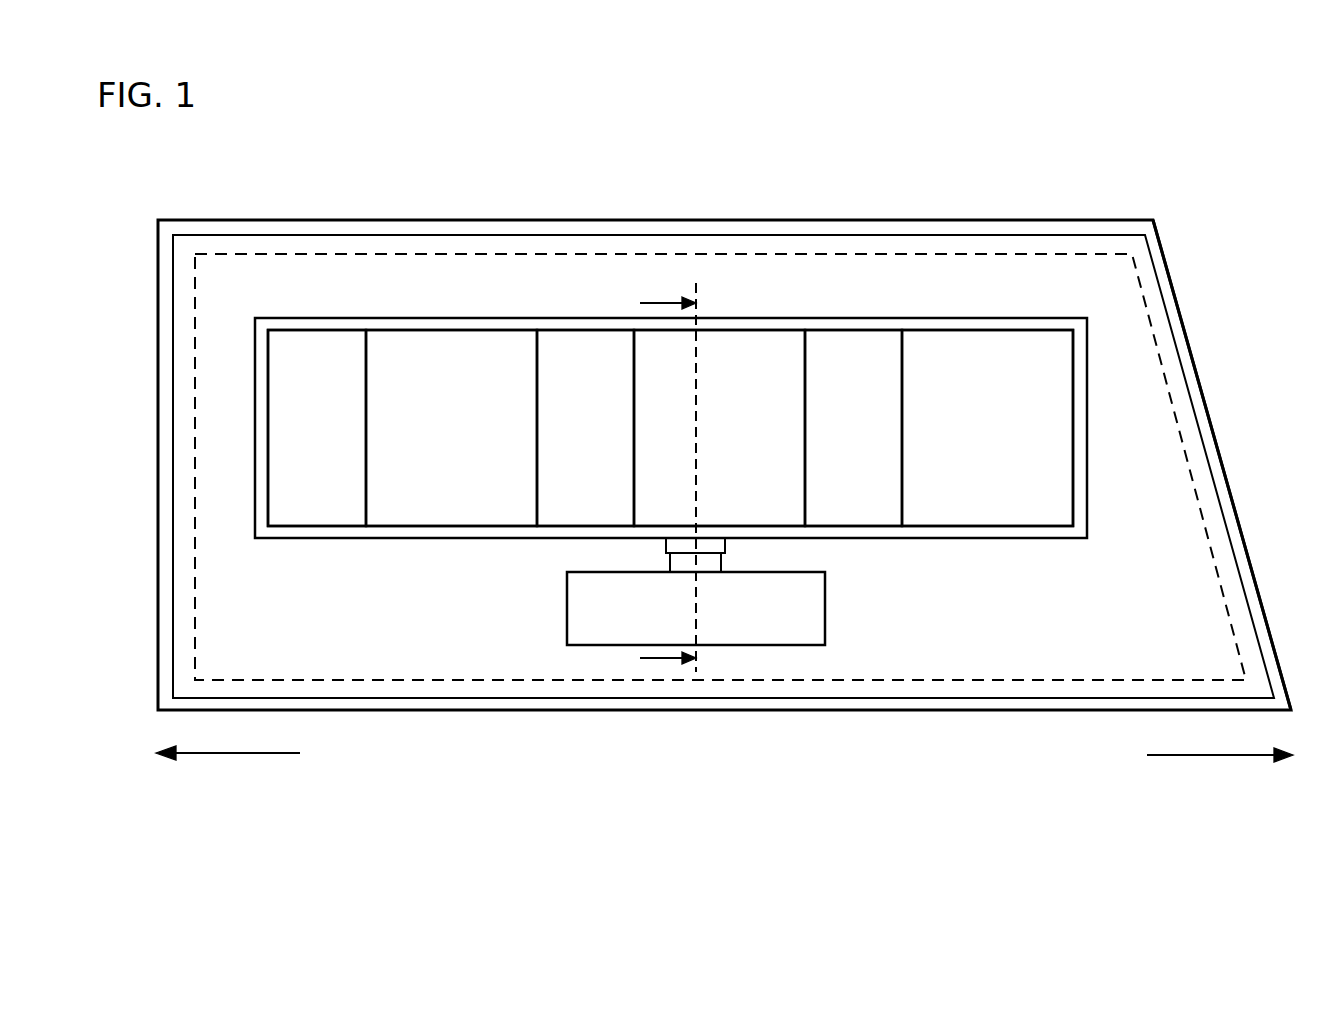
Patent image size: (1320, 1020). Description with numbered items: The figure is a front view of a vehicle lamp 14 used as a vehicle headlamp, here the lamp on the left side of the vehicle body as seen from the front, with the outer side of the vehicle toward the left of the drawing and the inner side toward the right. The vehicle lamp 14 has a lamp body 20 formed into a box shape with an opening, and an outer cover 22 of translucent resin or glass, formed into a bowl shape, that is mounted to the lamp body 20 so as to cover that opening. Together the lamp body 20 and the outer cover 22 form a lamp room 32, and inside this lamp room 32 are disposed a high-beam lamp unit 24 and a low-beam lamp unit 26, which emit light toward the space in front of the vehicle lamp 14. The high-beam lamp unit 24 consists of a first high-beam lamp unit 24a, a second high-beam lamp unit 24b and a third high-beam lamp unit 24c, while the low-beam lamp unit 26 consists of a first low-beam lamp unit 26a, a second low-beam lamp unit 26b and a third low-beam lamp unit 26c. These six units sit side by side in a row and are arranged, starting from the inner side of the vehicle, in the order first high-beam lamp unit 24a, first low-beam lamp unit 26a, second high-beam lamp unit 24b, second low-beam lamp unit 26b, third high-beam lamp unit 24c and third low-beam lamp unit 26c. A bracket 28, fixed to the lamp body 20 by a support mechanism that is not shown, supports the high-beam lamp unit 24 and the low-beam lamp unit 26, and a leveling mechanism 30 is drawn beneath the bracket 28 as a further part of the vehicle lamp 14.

The vehicle lamp 14 is at (724, 463).
The lamp body 20 is at (344, 220).
The outer cover 22 is at (532, 254).
The high-beam lamp unit 24 is at (719, 397).
The first high-beam lamp unit 24a is at (957, 350).
The second high-beam lamp unit 24b is at (724, 350).
The third high-beam lamp unit 24c is at (410, 350).
The low-beam lamp unit 26 is at (591, 397).
The first low-beam lamp unit 26a is at (836, 350).
The second low-beam lamp unit 26b is at (565, 350).
The third low-beam lamp unit 26c is at (289, 350).
The bracket 28 is at (333, 540).
The leveling mechanism 30 is at (825, 608).
The lamp room 32 is at (1142, 366).